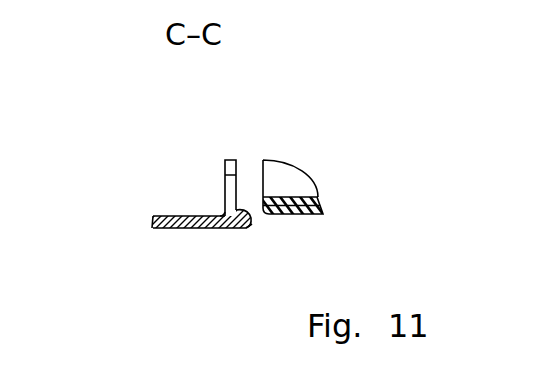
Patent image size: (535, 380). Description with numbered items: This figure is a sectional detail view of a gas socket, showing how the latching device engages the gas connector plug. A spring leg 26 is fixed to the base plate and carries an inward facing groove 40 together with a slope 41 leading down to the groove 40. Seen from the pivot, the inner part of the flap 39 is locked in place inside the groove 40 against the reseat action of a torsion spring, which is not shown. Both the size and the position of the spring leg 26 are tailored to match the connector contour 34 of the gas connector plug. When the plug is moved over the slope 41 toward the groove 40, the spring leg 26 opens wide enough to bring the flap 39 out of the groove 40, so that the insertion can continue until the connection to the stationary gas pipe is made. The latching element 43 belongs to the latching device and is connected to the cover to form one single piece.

The spring leg 26 is at (153, 227).
The connector contour 34 is at (320, 202).
The flap 39 is at (225, 173).
The groove 40 is at (221, 213).
The slope 41 is at (247, 213).
The latching element 43 is at (253, 226).